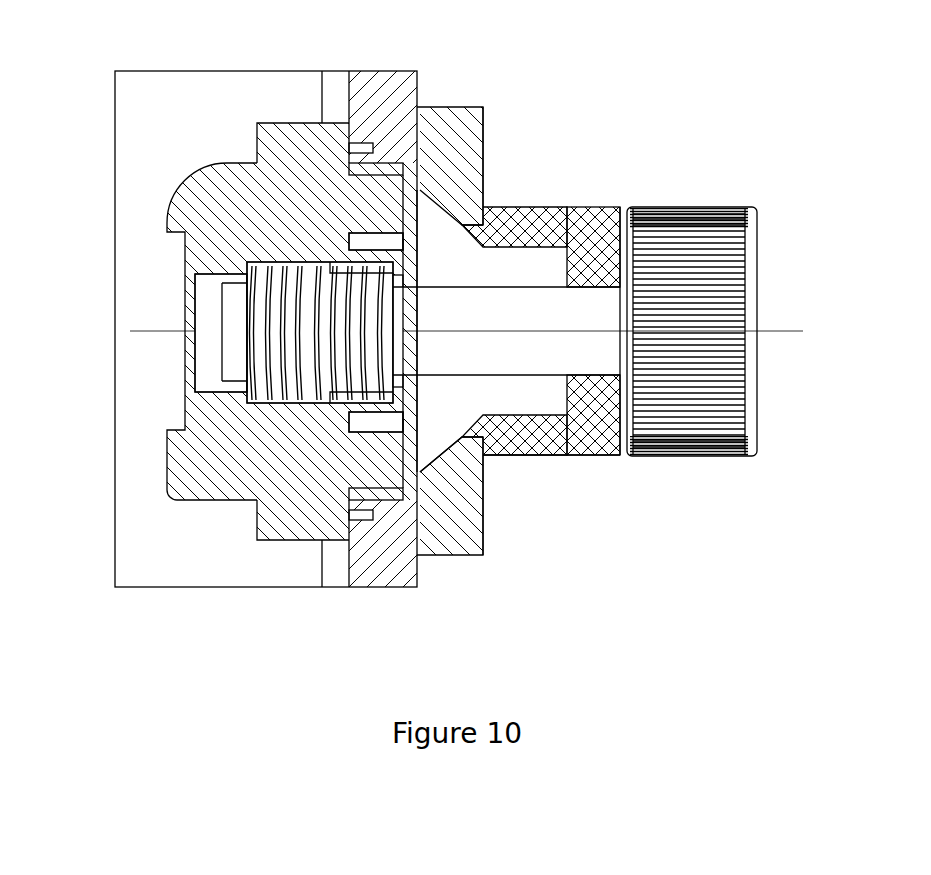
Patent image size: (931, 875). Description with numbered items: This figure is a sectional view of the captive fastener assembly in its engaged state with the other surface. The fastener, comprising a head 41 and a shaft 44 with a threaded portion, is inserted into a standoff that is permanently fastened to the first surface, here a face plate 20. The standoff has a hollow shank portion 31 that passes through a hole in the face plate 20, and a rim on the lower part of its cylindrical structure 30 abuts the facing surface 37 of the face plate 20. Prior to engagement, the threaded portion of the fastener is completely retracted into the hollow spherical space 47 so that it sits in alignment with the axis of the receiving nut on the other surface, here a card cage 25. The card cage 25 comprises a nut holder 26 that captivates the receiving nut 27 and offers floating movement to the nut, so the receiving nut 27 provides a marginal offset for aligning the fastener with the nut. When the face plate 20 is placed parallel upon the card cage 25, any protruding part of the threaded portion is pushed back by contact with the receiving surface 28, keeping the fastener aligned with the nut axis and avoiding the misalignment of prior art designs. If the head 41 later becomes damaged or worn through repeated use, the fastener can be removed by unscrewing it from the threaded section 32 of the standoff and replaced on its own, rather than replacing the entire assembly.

The face plate 20 is at (455, 107).
The card cage 25 is at (252, 588).
The nut holder 26 is at (262, 121).
The receiving nut 27 is at (253, 318).
The receiving surface 28 is at (423, 473).
The cylindrical structure 30 is at (593, 457).
The shank portion 31 is at (453, 437).
The threaded section 32 is at (578, 258).
The facing surface 37 is at (483, 135).
The head 41 is at (715, 207).
The shaft 44 is at (513, 286).
The hollow spherical space 47 is at (488, 262).